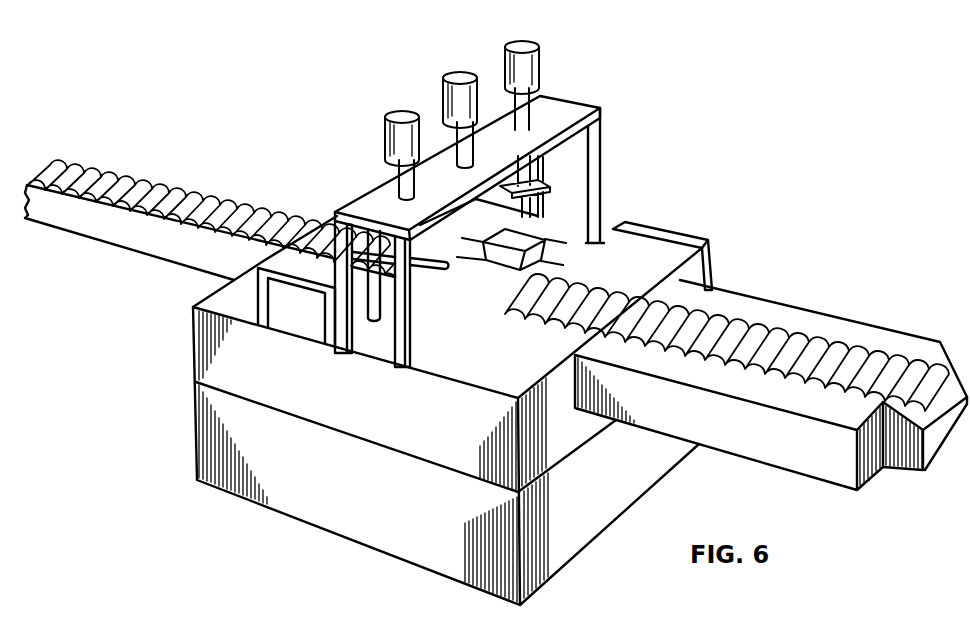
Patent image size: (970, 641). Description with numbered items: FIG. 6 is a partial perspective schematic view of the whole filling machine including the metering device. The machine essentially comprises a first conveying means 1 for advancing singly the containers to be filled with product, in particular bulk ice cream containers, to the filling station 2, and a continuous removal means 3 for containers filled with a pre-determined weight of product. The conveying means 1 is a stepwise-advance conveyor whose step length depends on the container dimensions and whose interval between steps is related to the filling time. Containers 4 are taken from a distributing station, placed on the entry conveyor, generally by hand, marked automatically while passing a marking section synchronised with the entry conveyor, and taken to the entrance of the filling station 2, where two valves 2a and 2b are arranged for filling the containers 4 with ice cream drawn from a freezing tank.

The first conveying means 1 is at (180, 264).
The filling station 2 is at (566, 91).
The valve 2a is at (521, 45).
The valve 2b is at (401, 114).
The continuous removal means 3 is at (797, 340).
The container 4 is at (522, 240).